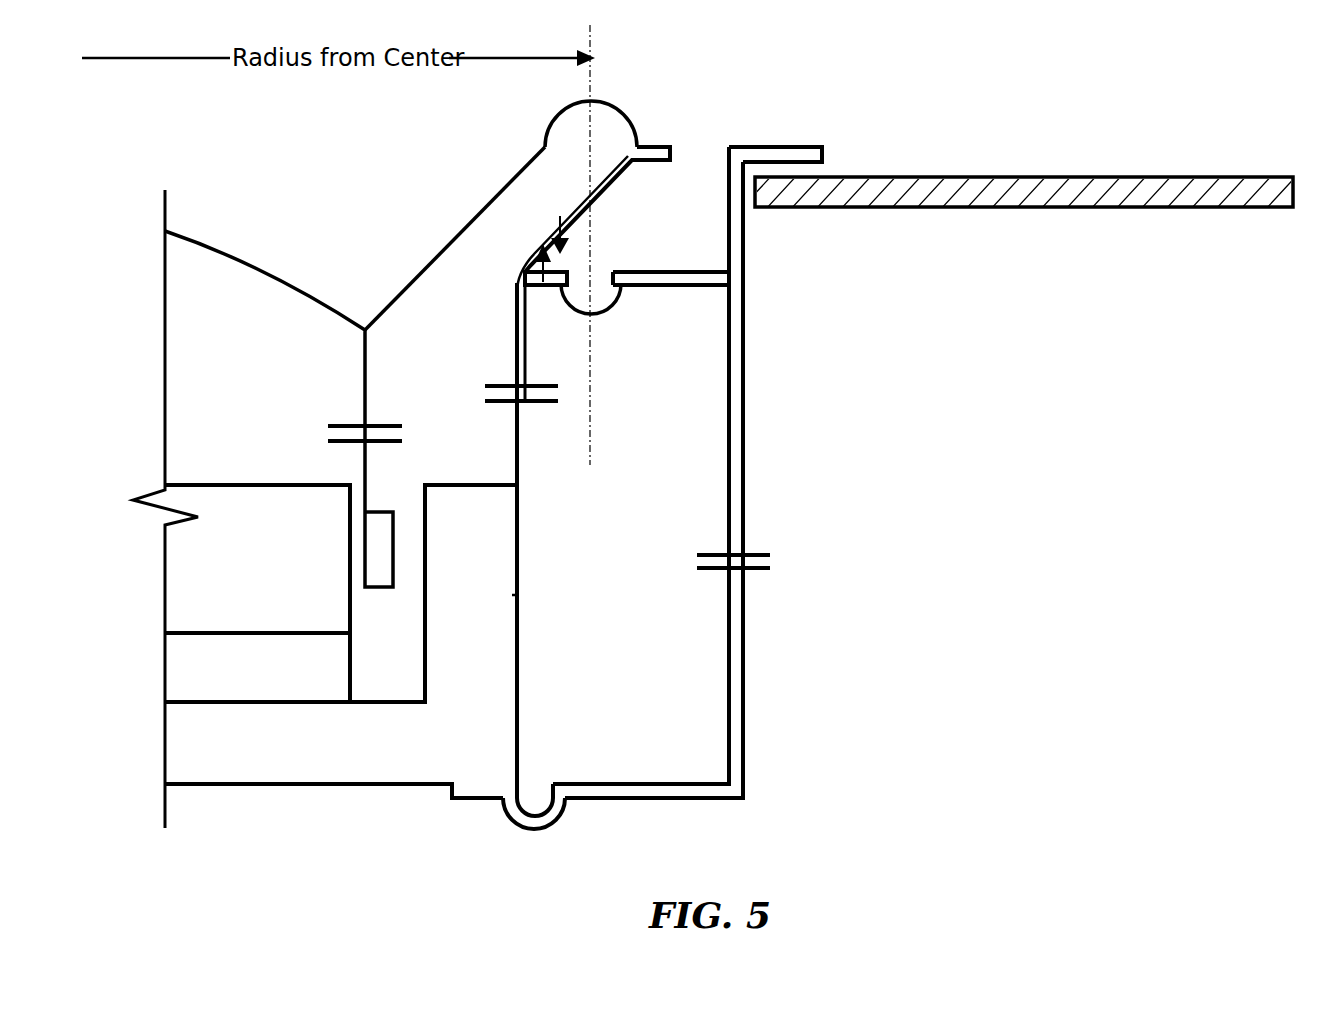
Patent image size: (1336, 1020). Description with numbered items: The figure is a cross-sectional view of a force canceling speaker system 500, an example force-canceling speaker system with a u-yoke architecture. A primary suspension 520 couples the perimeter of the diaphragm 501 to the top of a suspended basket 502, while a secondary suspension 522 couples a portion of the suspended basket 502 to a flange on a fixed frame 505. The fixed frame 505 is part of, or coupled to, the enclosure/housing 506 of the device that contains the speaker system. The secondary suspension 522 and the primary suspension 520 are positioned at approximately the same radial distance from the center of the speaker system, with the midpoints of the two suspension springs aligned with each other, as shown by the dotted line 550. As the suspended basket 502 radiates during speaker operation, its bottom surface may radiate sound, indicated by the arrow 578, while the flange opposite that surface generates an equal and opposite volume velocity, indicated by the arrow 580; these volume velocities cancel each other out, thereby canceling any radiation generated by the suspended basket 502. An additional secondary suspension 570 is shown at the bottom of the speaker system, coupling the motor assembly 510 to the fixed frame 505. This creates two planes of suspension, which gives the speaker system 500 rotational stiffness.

The force canceling speaker system 500 is at (1244, 92).
The diaphragm 501 is at (438, 252).
The suspended basket 502 is at (668, 146).
The fixed frame 505 is at (782, 153).
The enclosure/housing 506 is at (1078, 178).
The motor assembly 510 is at (435, 735).
The primary suspension 520 is at (548, 127).
The secondary suspension 522 is at (603, 311).
The dotted line 550 is at (587, 82).
The additional secondary suspension 570 is at (552, 806).
The arrow 578 is at (562, 238).
The arrow 580 is at (537, 258).